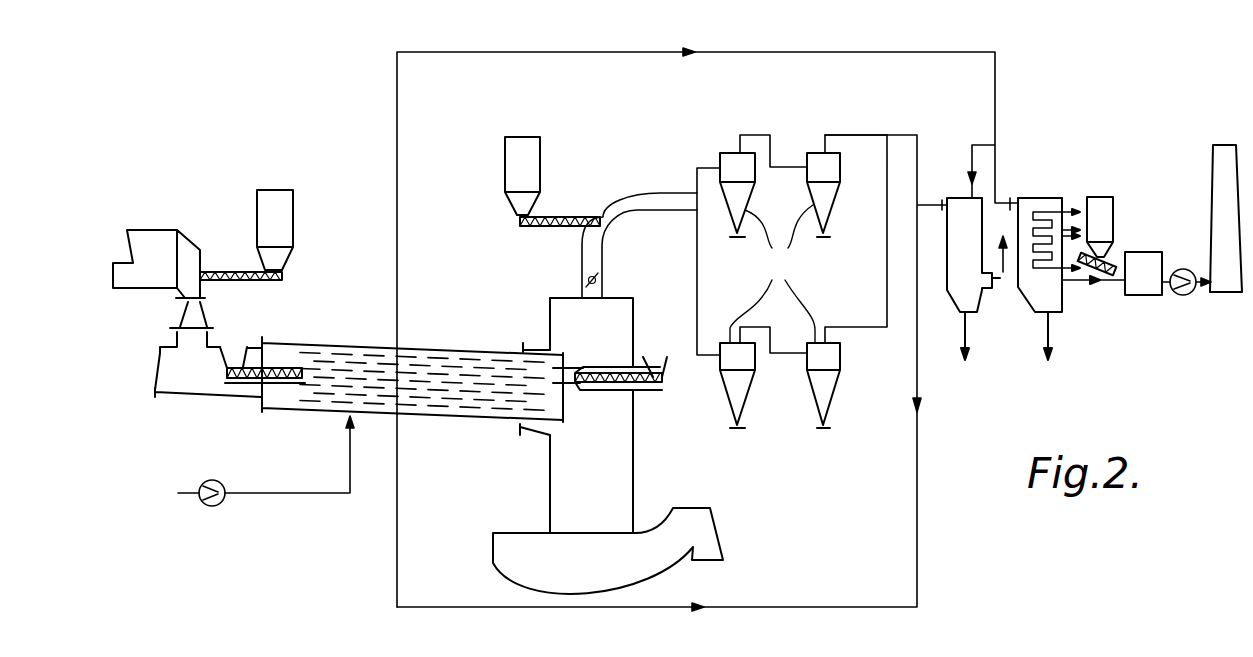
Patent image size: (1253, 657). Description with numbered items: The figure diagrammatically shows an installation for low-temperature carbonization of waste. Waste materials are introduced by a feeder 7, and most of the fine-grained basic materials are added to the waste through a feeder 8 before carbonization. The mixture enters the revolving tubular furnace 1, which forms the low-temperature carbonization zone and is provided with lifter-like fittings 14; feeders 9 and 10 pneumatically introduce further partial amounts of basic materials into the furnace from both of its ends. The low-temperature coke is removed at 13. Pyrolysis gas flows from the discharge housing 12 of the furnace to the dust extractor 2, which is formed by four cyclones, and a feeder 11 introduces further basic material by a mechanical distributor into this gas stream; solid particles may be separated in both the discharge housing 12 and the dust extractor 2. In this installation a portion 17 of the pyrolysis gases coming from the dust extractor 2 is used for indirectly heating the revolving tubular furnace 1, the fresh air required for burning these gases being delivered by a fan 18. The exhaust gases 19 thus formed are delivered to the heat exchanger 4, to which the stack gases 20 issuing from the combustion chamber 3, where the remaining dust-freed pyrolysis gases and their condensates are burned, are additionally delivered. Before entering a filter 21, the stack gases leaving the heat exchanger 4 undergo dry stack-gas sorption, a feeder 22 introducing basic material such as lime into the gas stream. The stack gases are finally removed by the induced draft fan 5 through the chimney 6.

The revolving tubular furnace 1 is at (340, 345).
The dust extractor 2 is at (792, 281).
The combustion chamber 3 is at (957, 196).
The heat exchanger 4 is at (1035, 196).
The induced draft fan 5 is at (1183, 268).
The chimney 6 is at (1222, 143).
The feeder 7 is at (147, 290).
The feeder 8 is at (272, 190).
The feeder 9 is at (232, 356).
The feeder 10 is at (655, 356).
The feeder 11 is at (527, 140).
The discharge housing 12 is at (564, 297).
The low-temperature coke removal 13 is at (707, 585).
The lifter-like fittings 14 is at (330, 401).
The portion of the pyrolysis gases 17 is at (918, 443).
The fan 18 is at (212, 480).
The exhaust gases 19 is at (770, 52).
The stack gases 20 is at (1005, 284).
The filter 21 is at (1140, 251).
The feeder 22 is at (1098, 195).